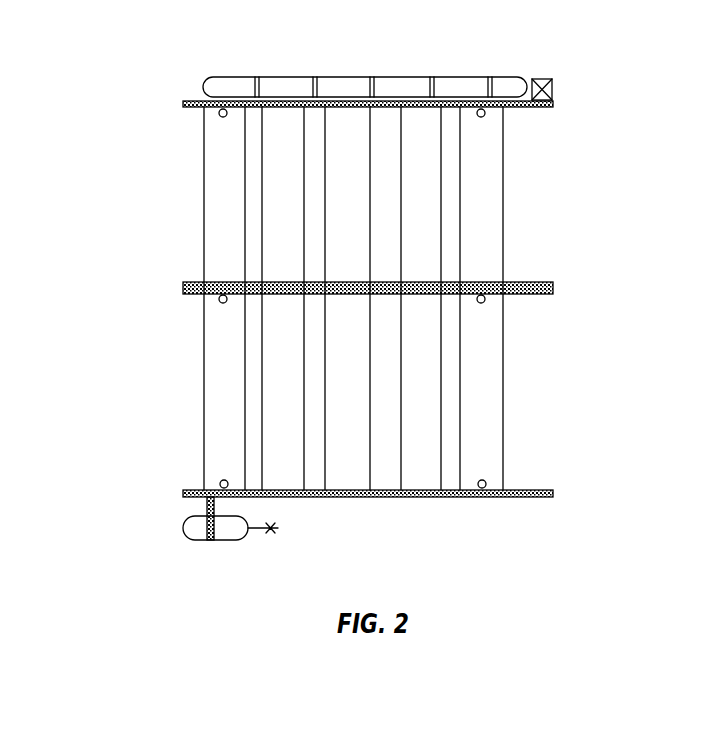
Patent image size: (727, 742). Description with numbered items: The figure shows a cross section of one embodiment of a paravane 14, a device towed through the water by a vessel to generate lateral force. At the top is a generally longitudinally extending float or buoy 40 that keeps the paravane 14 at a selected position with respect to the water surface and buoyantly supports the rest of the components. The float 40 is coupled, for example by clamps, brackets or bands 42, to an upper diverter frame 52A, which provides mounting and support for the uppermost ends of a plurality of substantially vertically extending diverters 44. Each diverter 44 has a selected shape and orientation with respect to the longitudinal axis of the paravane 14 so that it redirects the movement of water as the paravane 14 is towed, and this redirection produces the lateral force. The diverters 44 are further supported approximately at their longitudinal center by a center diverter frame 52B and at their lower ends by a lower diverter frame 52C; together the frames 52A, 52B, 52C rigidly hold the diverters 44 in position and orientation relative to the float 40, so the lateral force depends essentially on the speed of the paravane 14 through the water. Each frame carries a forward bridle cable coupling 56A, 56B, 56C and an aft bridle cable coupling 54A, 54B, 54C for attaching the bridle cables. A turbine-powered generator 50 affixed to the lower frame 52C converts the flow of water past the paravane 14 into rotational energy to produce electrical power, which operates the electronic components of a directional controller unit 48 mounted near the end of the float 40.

The paravane 14 is at (103, 42).
The float 40 is at (345, 77).
The bands 42 is at (509, 56).
The diverters 44 is at (212, 188).
The directional controller unit 48 is at (543, 79).
The turbine-powered generator 50 is at (226, 534).
The upper diverter frame 52A is at (185, 103).
The center diverter frame 52B is at (185, 287).
The lower diverter frame 52C is at (185, 492).
The aft bridle cable coupling 54A is at (485, 117).
The aft bridle cable coupling 54B is at (485, 303).
The aft bridle cable coupling 54C is at (484, 480).
The forward bridle cable coupling 56A is at (221, 117).
The forward bridle cable coupling 56B is at (222, 303).
The forward bridle cable coupling 56C is at (224, 480).